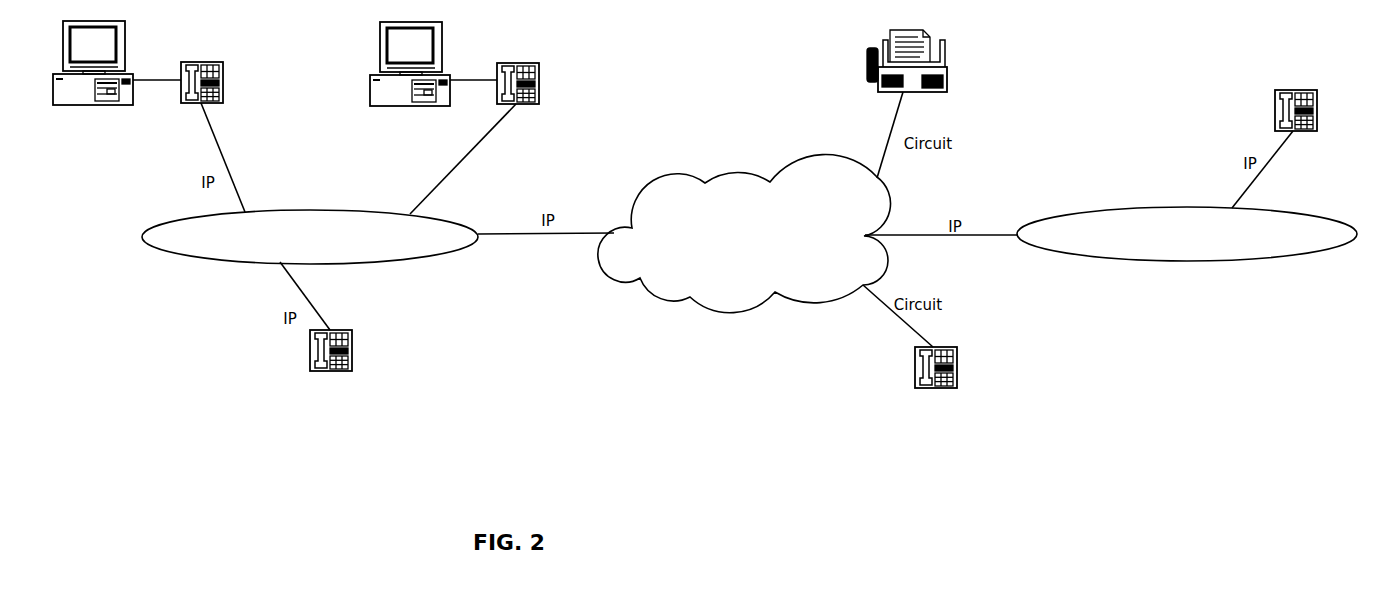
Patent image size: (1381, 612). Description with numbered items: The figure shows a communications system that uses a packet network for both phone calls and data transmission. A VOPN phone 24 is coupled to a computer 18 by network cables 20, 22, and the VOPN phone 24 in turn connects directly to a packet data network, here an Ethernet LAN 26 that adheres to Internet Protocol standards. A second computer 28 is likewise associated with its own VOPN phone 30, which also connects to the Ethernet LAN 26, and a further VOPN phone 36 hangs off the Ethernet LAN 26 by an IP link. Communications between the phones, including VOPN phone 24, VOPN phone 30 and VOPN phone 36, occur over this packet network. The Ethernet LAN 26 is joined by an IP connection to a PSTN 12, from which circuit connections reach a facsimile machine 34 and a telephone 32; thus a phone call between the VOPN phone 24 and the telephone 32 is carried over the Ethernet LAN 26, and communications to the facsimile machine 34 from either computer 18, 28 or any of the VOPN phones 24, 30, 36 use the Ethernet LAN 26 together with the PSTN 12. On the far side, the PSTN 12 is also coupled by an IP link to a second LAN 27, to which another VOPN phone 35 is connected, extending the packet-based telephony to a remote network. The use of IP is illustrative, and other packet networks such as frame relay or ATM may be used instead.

The PSTN 12 is at (744, 234).
The computer 18 is at (77, 73).
The network cable 20 is at (157, 98).
The network cable 22 is at (223, 157).
The VOPN phone 24 is at (199, 58).
The Ethernet LAN 26 is at (310, 237).
The LAN 27 is at (1187, 236).
The computer 28 is at (410, 64).
The VOPN phone 30 is at (521, 83).
The telephone 32 is at (944, 380).
The facsimile machine 34 is at (918, 55).
The VOPN phone 35 is at (1306, 96).
The VOPN phone 36 is at (329, 375).